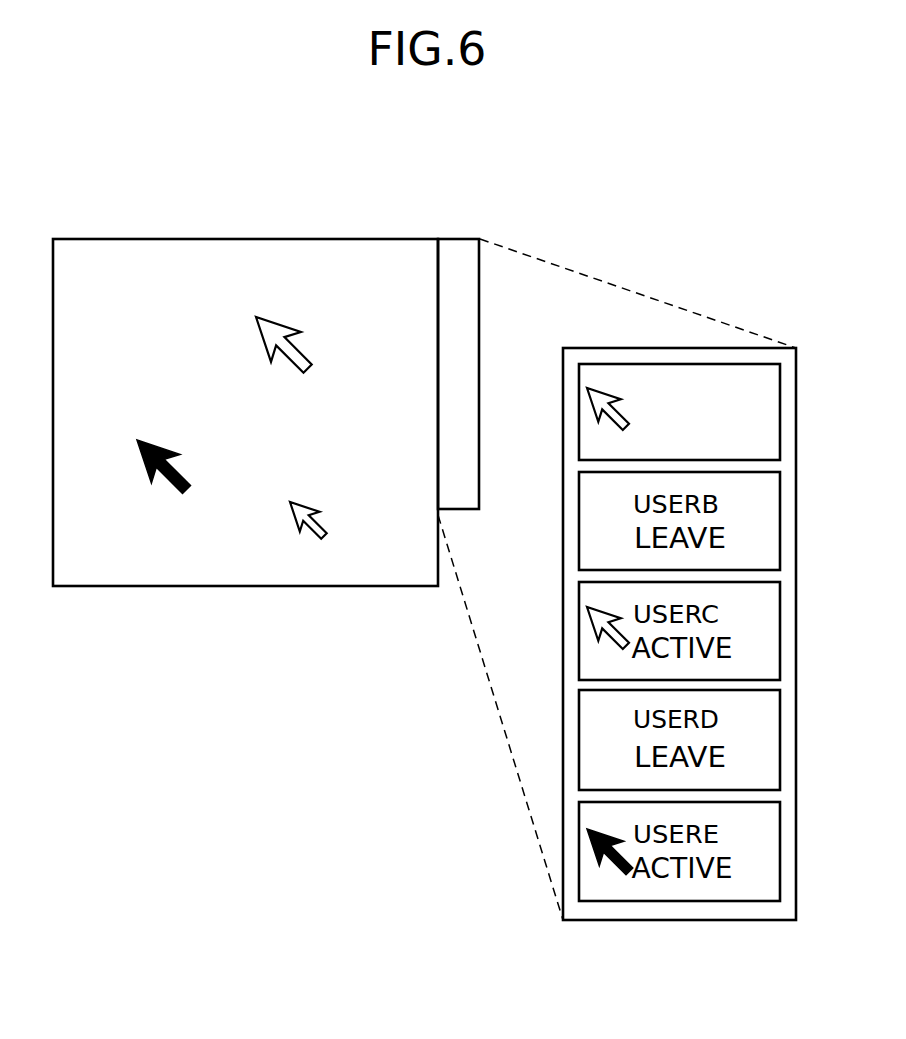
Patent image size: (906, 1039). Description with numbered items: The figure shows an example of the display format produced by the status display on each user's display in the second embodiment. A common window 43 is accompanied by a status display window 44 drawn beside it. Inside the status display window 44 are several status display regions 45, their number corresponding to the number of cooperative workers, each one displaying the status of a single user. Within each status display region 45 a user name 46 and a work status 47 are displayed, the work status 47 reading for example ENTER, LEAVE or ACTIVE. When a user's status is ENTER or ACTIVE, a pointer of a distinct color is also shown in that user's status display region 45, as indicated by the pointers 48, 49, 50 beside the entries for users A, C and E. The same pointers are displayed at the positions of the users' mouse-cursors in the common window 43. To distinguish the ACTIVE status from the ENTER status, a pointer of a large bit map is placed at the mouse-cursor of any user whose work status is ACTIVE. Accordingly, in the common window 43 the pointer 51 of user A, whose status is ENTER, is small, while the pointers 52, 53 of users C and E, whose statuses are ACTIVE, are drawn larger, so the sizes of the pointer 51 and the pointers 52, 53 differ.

The common window 43 is at (300, 238).
The status display window 44 is at (479, 330).
The status display region 45 is at (781, 383).
The user name 46 is at (710, 389).
The work status 47 is at (733, 438).
The pointer 48 is at (595, 402).
The pointer 49 is at (592, 623).
The pointer 50 is at (592, 850).
The pointer of user A 51 is at (312, 506).
The pointer of user C 52 is at (285, 322).
The pointer of user E 53 is at (170, 446).